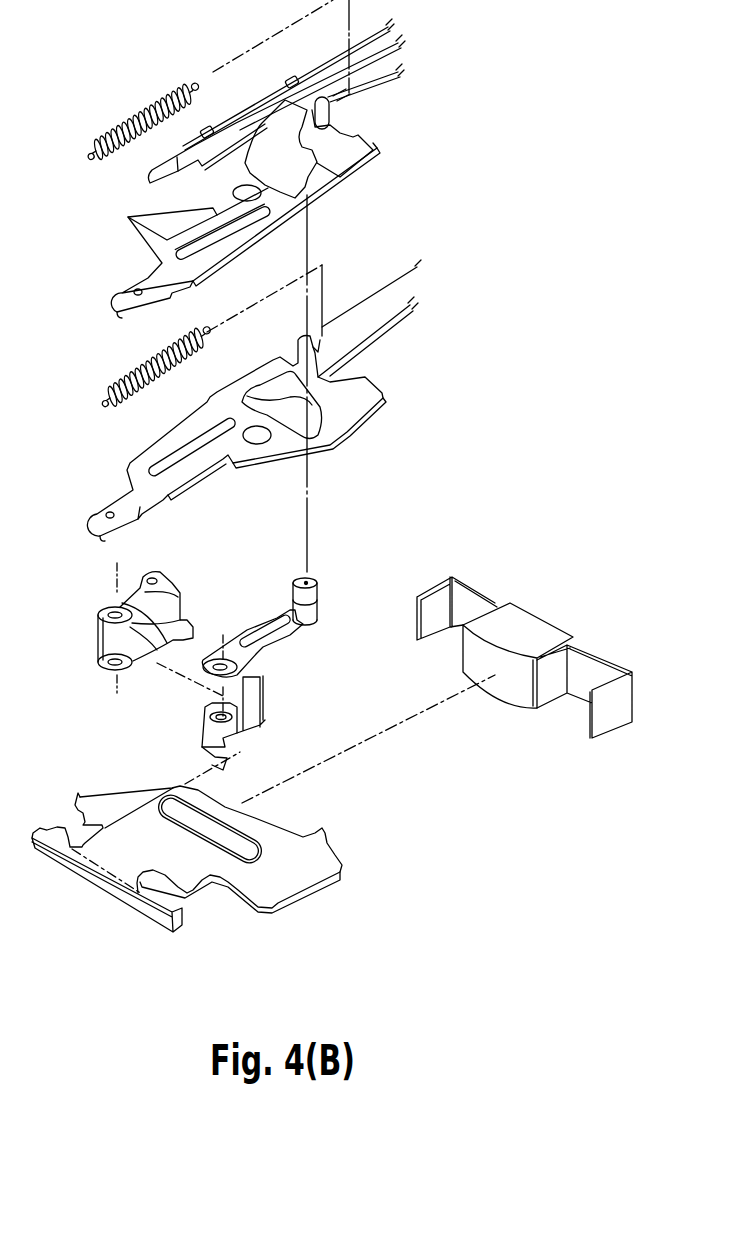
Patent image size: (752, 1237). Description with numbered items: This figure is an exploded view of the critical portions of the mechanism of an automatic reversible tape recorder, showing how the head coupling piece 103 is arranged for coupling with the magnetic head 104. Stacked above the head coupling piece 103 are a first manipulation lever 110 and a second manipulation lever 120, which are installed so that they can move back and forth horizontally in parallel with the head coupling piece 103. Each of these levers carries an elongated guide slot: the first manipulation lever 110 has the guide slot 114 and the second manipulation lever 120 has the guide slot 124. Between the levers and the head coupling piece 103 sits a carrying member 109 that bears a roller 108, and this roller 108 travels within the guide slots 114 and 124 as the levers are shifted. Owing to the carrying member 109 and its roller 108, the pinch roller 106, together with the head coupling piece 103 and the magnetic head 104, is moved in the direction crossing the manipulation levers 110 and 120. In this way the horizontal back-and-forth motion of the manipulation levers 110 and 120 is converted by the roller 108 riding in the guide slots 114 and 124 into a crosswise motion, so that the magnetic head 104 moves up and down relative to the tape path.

The head coupling piece 103 is at (305, 872).
The magnetic head 104 is at (522, 627).
The pinch roller 106 is at (168, 622).
The roller 108 is at (312, 605).
The carrying member 109 is at (270, 695).
The first manipulation lever 110 is at (152, 284).
The guide slot 114 is at (295, 168).
The second manipulation lever 120 is at (117, 494).
The guide slot 124 is at (297, 410).